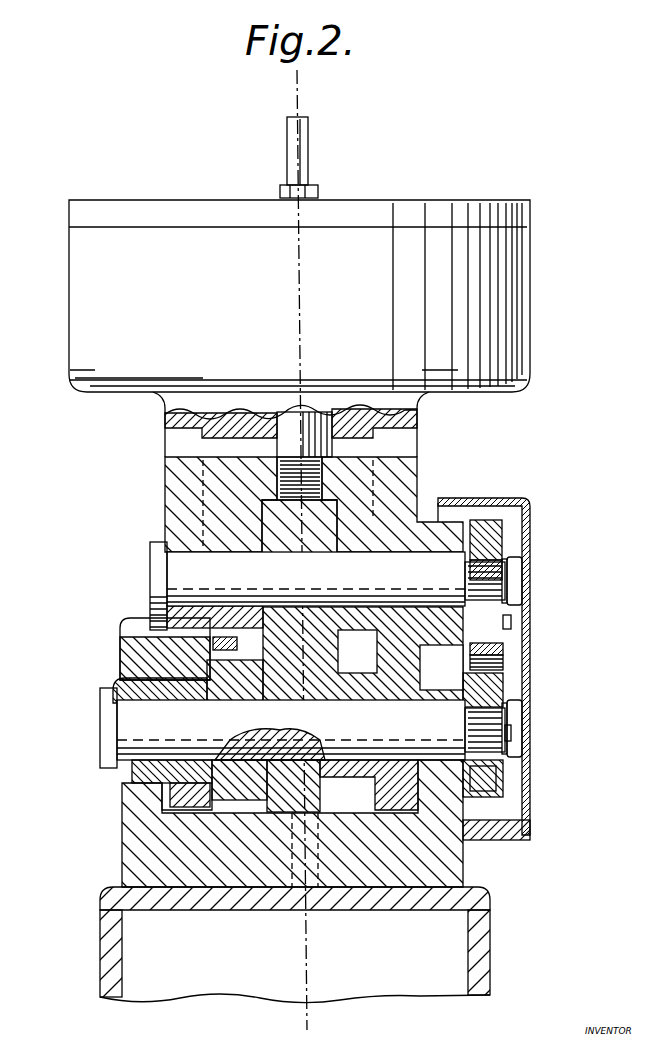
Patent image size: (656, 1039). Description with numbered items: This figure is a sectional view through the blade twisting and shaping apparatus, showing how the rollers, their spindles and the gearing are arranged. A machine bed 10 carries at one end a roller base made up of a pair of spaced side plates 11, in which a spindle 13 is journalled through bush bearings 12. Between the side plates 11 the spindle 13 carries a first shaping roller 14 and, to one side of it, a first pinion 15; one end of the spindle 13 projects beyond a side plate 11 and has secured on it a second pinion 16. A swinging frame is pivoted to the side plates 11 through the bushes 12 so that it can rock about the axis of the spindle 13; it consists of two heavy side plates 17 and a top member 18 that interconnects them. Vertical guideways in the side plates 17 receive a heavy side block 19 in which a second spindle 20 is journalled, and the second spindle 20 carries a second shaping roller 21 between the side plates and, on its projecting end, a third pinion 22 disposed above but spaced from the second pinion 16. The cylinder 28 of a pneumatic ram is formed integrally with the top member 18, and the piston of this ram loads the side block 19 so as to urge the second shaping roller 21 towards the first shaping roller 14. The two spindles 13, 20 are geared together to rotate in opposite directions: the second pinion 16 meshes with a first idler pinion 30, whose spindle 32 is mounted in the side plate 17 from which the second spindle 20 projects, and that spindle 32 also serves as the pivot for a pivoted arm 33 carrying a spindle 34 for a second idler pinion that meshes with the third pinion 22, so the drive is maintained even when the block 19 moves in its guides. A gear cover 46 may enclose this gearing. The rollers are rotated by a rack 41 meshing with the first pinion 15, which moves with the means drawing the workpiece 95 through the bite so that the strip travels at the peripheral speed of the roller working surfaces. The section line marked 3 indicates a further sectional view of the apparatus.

The section line 3- 3 is at (265, 87).
The machine bed 10 is at (108, 958).
The side plates 11 is at (130, 792).
The bush bearings 12 is at (165, 783).
The spindle 13 is at (143, 721).
The first shaping roller 14 is at (316, 769).
The first pinion 15 is at (240, 790).
The second pinion 16 is at (497, 788).
The side plates 17 is at (170, 663).
The top member 18 is at (167, 410).
The side block 19 is at (183, 480).
The second spindle 20 is at (177, 572).
The second shaping roller 21 is at (262, 522).
The third pinion 22 is at (497, 533).
The cylinder 28 is at (532, 288).
The first idler pinion 30 is at (497, 653).
The spindle 32 is at (505, 673).
The pivoted arm 33 is at (420, 640).
The spindle 34 is at (505, 622).
The rack 41 is at (177, 662).
The gear cover 46 is at (527, 733).
The workpiece 95 is at (239, 653).